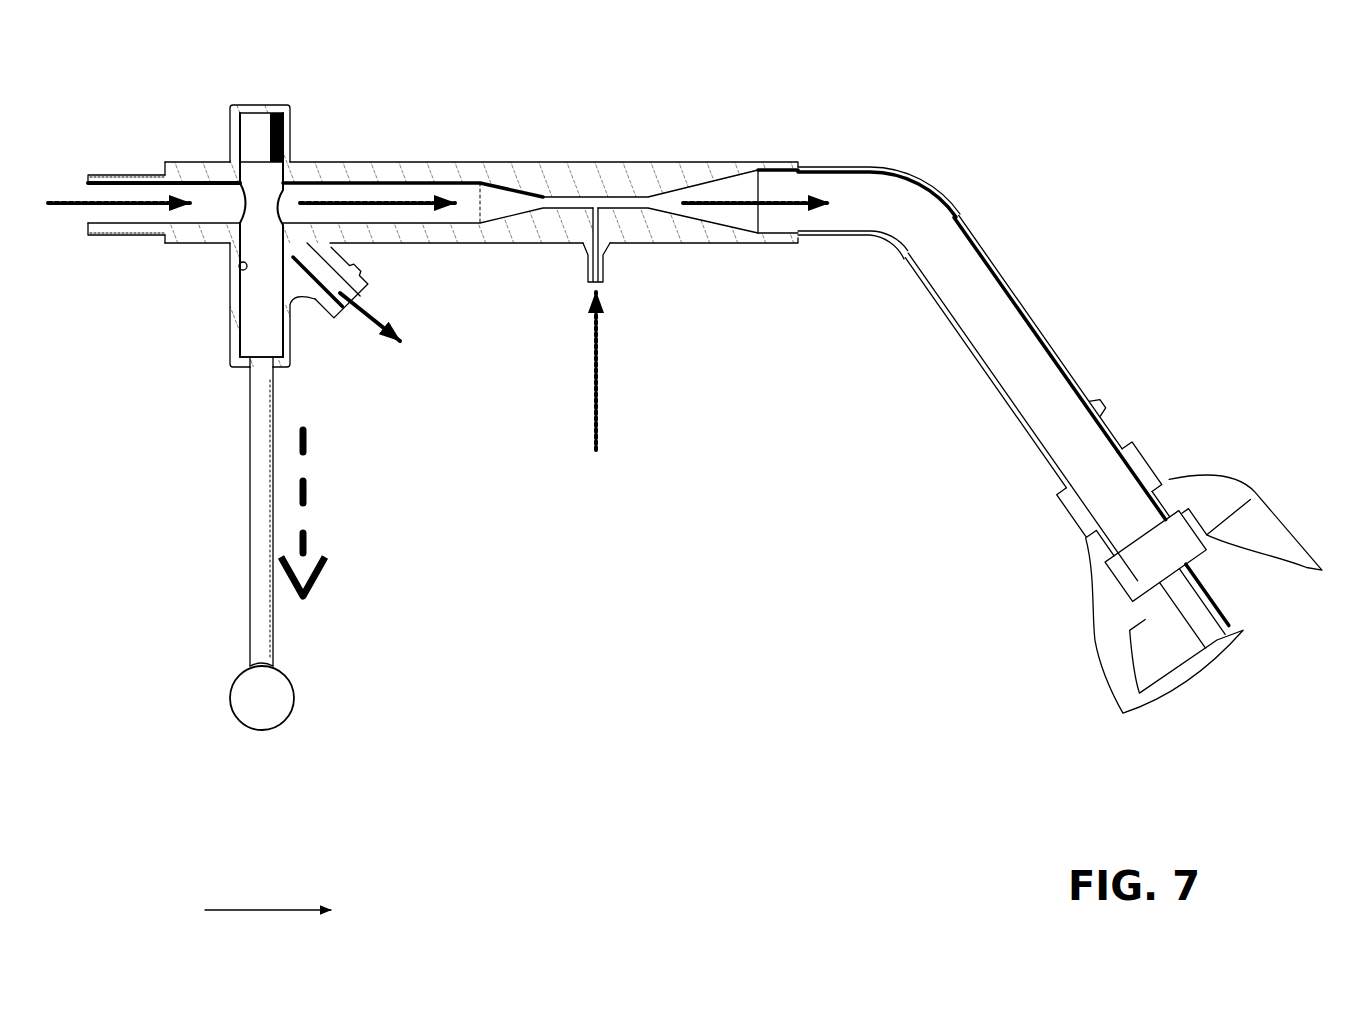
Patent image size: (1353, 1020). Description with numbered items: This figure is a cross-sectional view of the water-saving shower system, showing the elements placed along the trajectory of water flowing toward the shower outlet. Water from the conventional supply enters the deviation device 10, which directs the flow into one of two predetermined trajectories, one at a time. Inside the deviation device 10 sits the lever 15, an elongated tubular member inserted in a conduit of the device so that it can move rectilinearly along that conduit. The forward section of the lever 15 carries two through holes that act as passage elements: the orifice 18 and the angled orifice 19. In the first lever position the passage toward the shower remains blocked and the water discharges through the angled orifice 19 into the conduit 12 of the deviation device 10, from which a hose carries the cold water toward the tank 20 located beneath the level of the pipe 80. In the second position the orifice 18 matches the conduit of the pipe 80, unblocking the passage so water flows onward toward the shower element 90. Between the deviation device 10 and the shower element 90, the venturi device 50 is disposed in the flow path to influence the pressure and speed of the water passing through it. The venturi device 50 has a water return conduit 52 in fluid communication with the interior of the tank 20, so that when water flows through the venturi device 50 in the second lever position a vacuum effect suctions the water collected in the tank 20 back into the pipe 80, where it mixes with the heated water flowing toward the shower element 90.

The deviation device 10 is at (296, 129).
The conduit 12 is at (325, 319).
The lever 15 is at (247, 543).
The orifice 18 is at (243, 203).
The angled orifice 19 is at (240, 263).
The tank 20 is at (249, 910).
The venturi device 50 is at (614, 159).
The water return conduit 52 is at (611, 275).
The pipe 80 is at (1046, 326).
The shower element 90 is at (1252, 521).